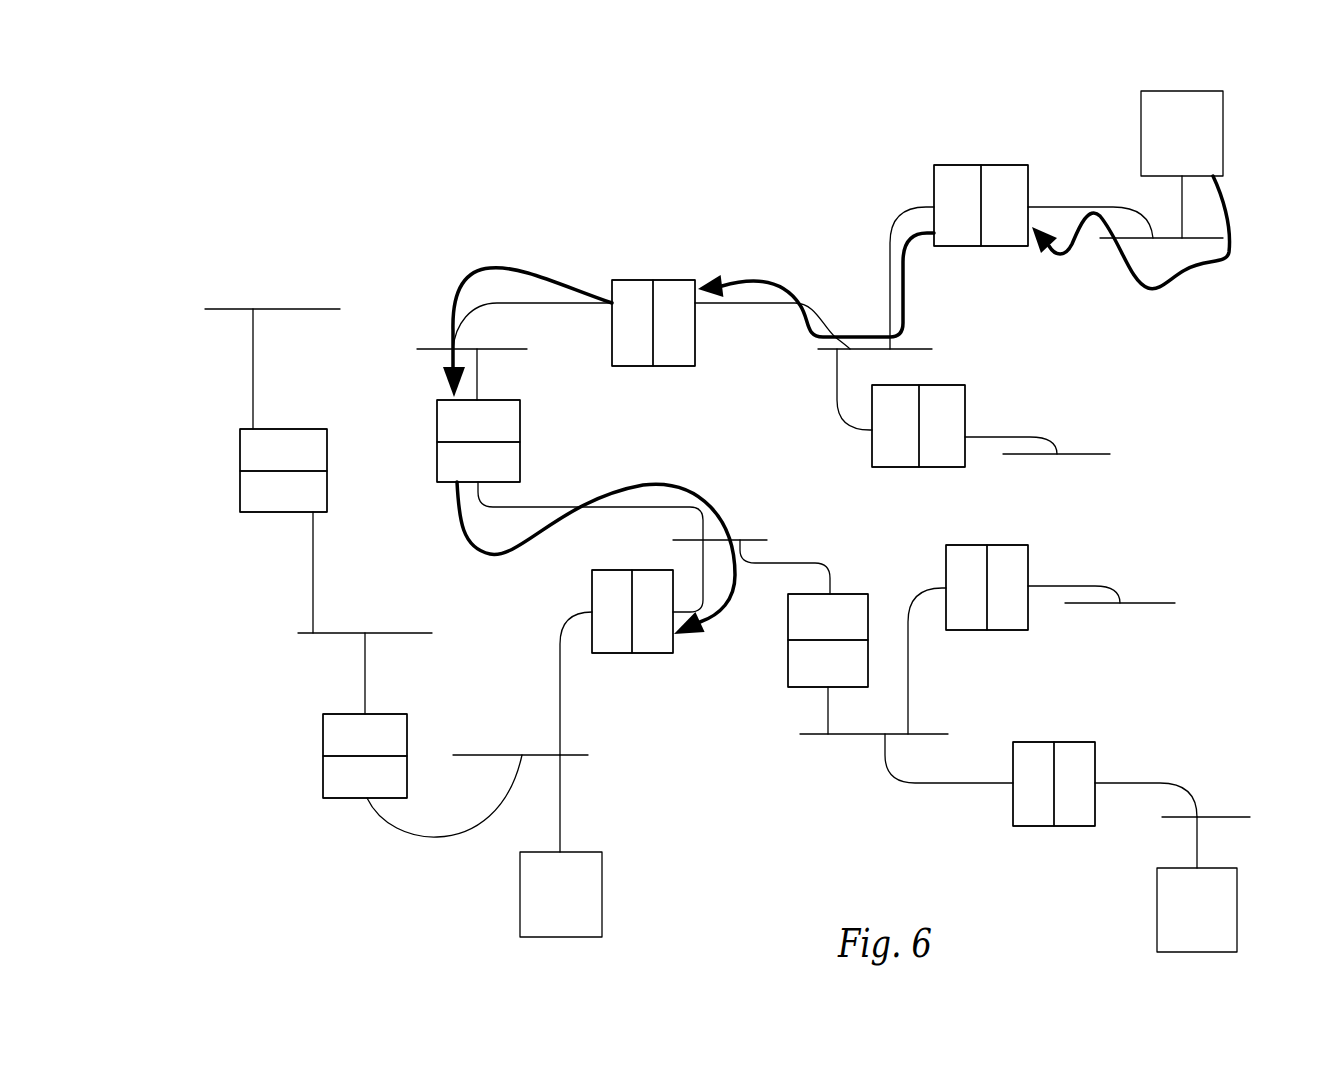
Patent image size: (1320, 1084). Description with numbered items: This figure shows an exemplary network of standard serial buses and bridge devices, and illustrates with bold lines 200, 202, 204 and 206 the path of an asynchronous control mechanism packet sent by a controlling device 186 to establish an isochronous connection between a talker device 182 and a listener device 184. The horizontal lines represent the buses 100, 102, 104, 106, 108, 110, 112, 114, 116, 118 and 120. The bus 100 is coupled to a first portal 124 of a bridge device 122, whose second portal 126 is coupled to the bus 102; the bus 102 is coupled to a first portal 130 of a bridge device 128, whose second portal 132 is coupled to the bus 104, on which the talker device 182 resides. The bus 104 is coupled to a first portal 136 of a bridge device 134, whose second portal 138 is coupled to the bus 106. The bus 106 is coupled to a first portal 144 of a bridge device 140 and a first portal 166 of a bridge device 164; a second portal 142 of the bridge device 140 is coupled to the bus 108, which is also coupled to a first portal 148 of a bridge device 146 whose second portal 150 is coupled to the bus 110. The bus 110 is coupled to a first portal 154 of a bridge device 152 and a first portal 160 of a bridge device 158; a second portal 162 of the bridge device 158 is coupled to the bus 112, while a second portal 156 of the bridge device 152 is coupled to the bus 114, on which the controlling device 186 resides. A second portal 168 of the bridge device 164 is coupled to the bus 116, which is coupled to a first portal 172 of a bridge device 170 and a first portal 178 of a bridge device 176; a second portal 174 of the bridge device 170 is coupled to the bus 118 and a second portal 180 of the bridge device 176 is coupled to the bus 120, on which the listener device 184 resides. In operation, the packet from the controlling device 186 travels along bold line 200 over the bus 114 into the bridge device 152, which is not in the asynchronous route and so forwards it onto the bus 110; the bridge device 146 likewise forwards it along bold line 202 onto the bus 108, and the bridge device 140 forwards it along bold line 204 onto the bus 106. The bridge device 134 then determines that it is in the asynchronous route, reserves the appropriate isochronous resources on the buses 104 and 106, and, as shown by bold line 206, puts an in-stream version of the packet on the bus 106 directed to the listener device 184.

The bus 100 is at (228, 309).
The bus 102 is at (400, 631).
The bus 104 is at (487, 753).
The bus 106 is at (750, 539).
The bus 108 is at (527, 340).
The bus 110 is at (920, 346).
The bus 112 is at (1078, 452).
The bus 114 is at (1108, 240).
The bus 116 is at (825, 737).
The bus 118 is at (1140, 601).
The bus 120 is at (1220, 815).
The bridge device 122 is at (272, 438).
The first portal 124 is at (240, 447).
The second portal 126 is at (240, 489).
The bridge device 128 is at (362, 728).
The first portal 130 is at (323, 734).
The second portal 132 is at (323, 774).
The bridge device 134 is at (621, 620).
The first portal 136 is at (613, 655).
The second portal 138 is at (657, 655).
The bridge device 140 is at (494, 441).
The second portal 142 is at (437, 423).
The first portal 144 is at (437, 468).
The bridge device 146 is at (658, 295).
The first portal 148 is at (628, 368).
The second portal 150 is at (672, 368).
The bridge device 152 is at (972, 188).
The first portal 154 is at (950, 248).
The second portal 156 is at (1010, 248).
The bridge device 158 is at (953, 425).
The first portal 160 is at (895, 470).
The second portal 162 is at (950, 470).
The bridge device 164 is at (829, 617).
The first portal 166 is at (788, 618).
The second portal 168 is at (788, 667).
The bridge device 170 is at (1002, 593).
The first portal 172 is at (968, 632).
The second portal 174 is at (1010, 632).
The bridge device 176 is at (1063, 778).
The first portal 178 is at (1035, 828).
The second portal 180 is at (1075, 828).
The talker device 182 is at (602, 893).
The listener device 184 is at (1238, 908).
The controlling device 186 is at (1223, 127).
The bold line 200 is at (1187, 285).
The control signal path 202 is at (758, 280).
The bold line 204 is at (462, 280).
The bold line 206 is at (678, 483).